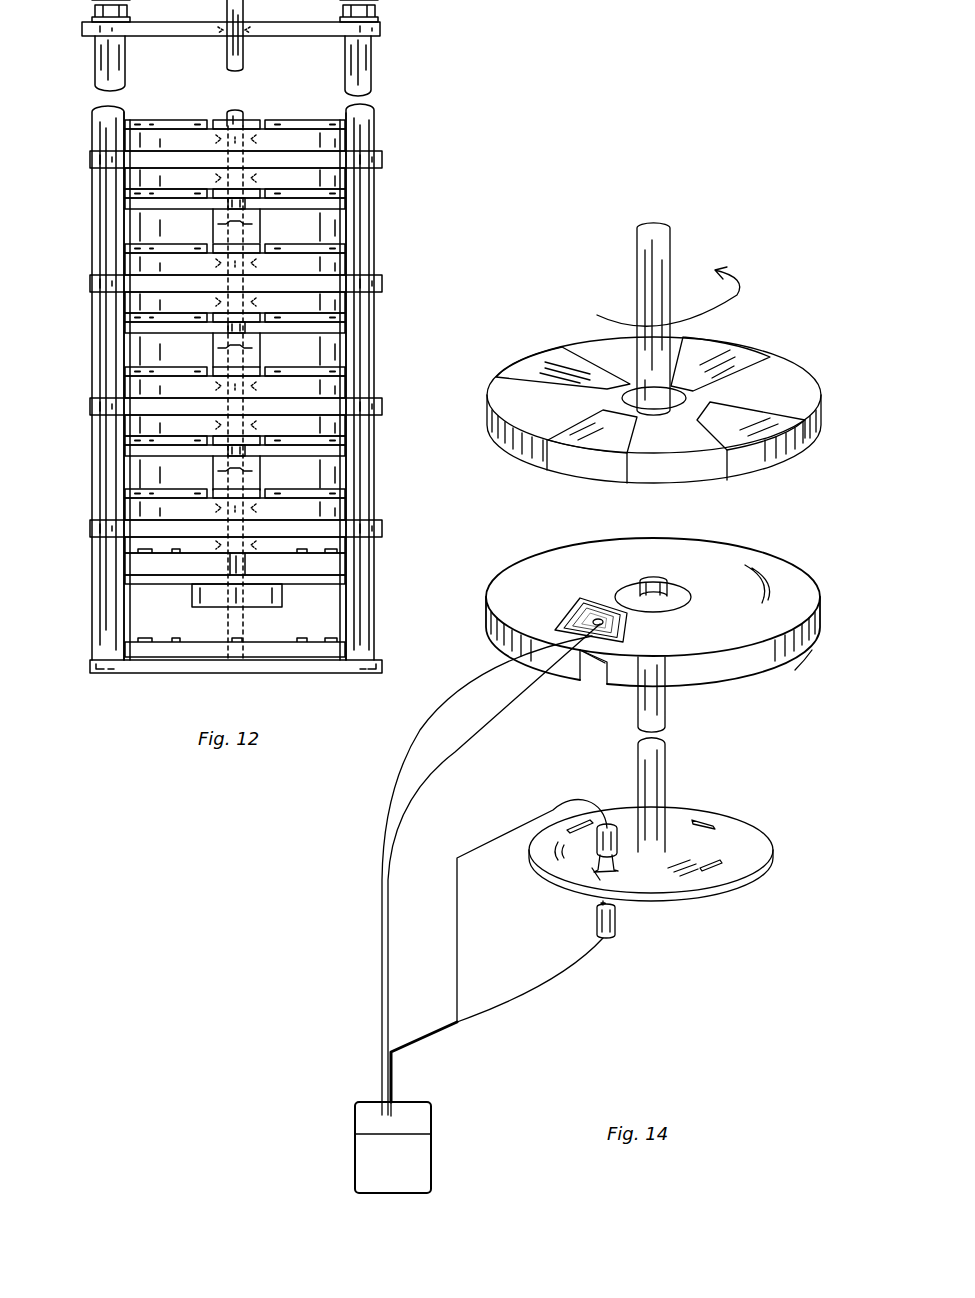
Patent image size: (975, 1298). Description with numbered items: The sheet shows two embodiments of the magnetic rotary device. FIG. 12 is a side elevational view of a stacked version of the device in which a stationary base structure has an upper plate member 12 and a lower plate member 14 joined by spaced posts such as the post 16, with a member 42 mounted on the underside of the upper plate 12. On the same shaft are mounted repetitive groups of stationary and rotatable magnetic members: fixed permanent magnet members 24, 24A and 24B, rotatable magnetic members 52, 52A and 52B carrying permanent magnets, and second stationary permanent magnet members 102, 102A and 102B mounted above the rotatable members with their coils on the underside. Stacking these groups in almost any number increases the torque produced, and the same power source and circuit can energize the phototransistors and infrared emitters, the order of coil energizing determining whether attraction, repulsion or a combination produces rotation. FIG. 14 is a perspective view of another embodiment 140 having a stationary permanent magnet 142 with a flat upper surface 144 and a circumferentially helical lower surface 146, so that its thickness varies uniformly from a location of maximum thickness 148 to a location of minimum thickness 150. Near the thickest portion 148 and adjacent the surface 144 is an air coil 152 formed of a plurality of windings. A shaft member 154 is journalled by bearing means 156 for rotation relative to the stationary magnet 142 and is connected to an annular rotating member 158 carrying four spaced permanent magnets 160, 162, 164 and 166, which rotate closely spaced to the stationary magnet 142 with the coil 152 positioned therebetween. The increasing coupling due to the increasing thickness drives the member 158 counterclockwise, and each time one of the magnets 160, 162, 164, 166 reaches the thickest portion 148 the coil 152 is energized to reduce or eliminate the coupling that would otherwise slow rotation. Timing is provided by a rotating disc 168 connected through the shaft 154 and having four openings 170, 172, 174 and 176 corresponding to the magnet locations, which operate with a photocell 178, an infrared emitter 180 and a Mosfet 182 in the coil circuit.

In FIG. 12, the upper plate member 12 is at (380, 28).
In FIG. 12, the lower plate member 14 is at (150, 668).
In FIG. 12, the post 16 is at (362, 632).
In FIG. 12, the fixed permanent magnet member 24 is at (150, 505).
In FIG. 12, the fixed permanent magnet member 24A is at (150, 385).
In FIG. 12, the fixed permanent magnet member 24B is at (150, 263).
In FIG. 12, the member mounted on underside of upper plate 42 is at (330, 545).
In FIG. 12, the rotatable magnetic member 52 is at (313, 468).
In FIG. 12, the rotatable magnetic member 52A is at (313, 346).
In FIG. 12, the rotatable magnetic member 52B is at (313, 226).
In FIG. 12, the second stationary permanent magnet member 102 is at (330, 423).
In FIG. 12, the second stationary permanent magnet member 102A is at (330, 304).
In FIG. 12, the second stationary permanent magnet member 102B is at (330, 143).
In FIG. 14, the device embodiment 140 is at (879, 463).
In FIG. 14, the stationary permanent magnet 142 is at (818, 573).
In FIG. 14, the flat upper surface 144 is at (820, 603).
In FIG. 14, the lower surface 146 is at (775, 670).
In FIG. 14, the location of maximum thickness 148 is at (580, 664).
In FIG. 14, the location of minimum thickness 150 is at (598, 692).
In FIG. 14, the air coil 152 is at (646, 645).
In FIG. 14, the shaft member 154 is at (663, 752).
In FIG. 14, the bearing means 156 is at (677, 588).
In FIG. 14, the rotating member 158 is at (832, 375).
In FIG. 14, the permanent magnet 160 is at (555, 462).
In FIG. 14, the permanent magnet 162 is at (535, 352).
In FIG. 14, the permanent magnet 164 is at (737, 355).
In FIG. 14, the permanent magnet 166 is at (770, 455).
In FIG. 14, the rotating disc 168 is at (773, 886).
In FIG. 14, the opening 170 is at (594, 870).
In FIG. 14, the opening 172 is at (583, 820).
In FIG. 14, the opening 174 is at (715, 825).
In FIG. 14, the opening 176 is at (720, 862).
In FIG. 14, the photocell 178 is at (618, 840).
In FIG. 14, the infrared emitter 180 is at (618, 926).
In FIG. 14, the Mosfet 182 is at (420, 1100).